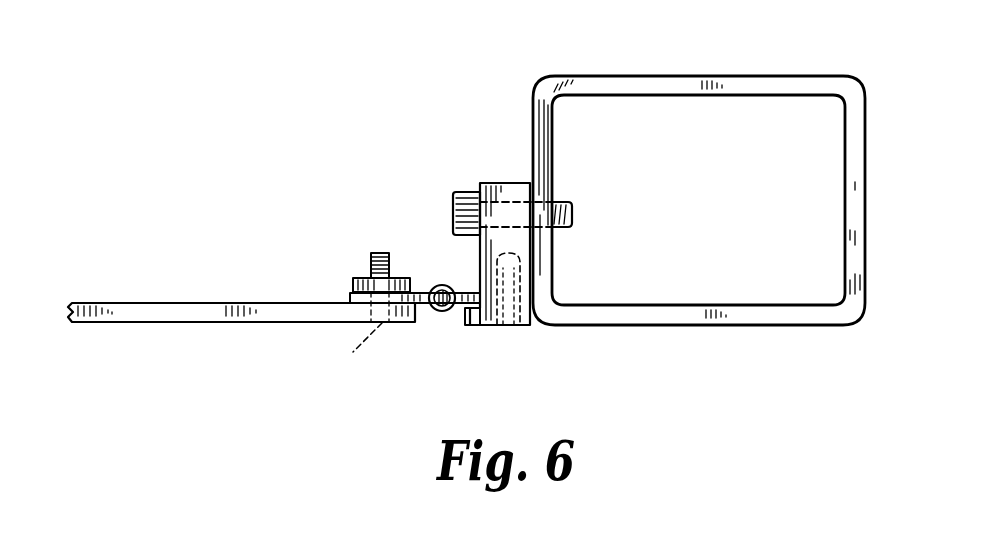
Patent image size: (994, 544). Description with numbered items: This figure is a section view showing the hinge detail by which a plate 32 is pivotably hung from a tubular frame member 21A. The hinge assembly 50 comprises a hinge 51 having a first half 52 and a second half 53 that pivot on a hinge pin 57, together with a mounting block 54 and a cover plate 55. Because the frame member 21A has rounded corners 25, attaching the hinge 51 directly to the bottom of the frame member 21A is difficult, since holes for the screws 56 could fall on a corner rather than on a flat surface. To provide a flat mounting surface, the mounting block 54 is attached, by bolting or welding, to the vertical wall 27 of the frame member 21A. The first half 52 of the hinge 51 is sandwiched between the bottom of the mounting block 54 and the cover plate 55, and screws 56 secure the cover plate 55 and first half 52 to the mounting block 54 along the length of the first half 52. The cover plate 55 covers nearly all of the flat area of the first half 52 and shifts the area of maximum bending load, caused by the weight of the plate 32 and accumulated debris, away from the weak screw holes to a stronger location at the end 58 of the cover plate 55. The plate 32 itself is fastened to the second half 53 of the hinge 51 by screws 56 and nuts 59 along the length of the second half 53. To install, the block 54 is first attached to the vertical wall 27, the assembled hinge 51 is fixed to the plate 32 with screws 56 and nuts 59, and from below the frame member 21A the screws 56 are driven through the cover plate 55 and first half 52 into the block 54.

The frame member 21A is at (713, 76).
The rounded corners 25 is at (698, 188).
The vertical wall 27 is at (532, 135).
The plate 32 is at (182, 302).
The hinge assembly 50 is at (393, 190).
The hinge 51 is at (447, 288).
The first half 52 is at (428, 260).
The second half 53 is at (425, 293).
The mounting block 54 is at (492, 182).
The cover plate 55 is at (533, 328).
The screws 56 is at (517, 355).
The hinge pin 57 is at (437, 311).
The end 58 is at (465, 325).
The nuts 59 is at (358, 280).